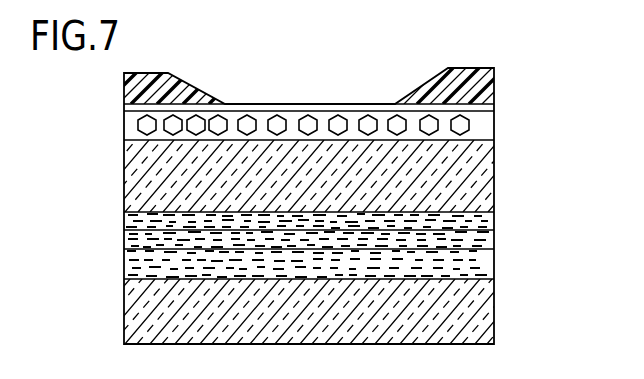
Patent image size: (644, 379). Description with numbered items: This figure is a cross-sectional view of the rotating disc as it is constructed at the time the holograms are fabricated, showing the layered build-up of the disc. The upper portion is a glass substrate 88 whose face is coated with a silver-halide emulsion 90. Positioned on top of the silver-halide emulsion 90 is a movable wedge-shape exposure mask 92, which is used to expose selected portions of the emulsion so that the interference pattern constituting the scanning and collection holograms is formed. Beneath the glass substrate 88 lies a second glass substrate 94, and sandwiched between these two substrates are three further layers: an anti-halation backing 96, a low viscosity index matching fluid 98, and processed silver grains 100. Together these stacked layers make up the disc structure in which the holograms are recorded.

The movable wedge-shape exposure mask 92 is at (478, 70).
The silver-halide emulsion 90 is at (482, 120).
The glass substrate 88 is at (482, 168).
The anti-halation backing 96 is at (490, 210).
The low viscosity index matching fluid 98 is at (490, 232).
The processed silver grains 100 is at (488, 260).
The second glass substrate 94 is at (485, 302).